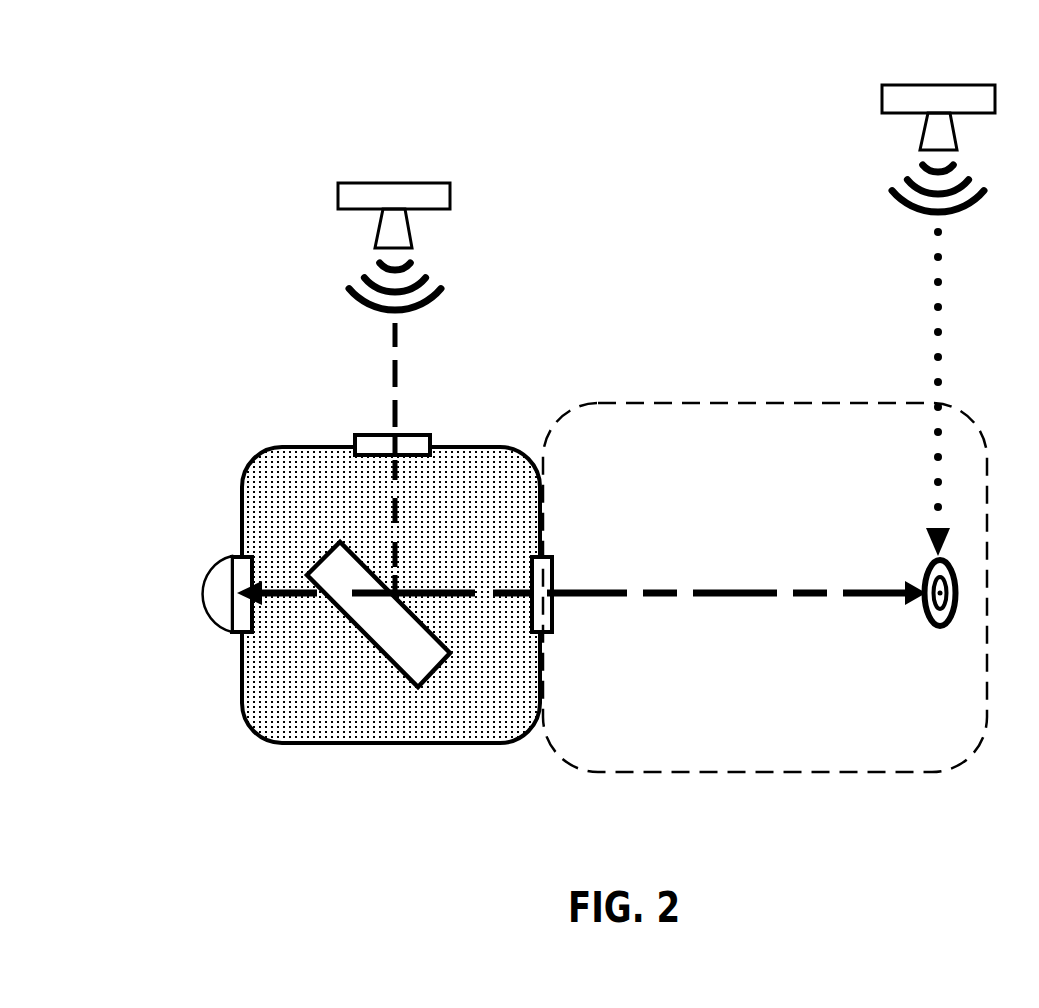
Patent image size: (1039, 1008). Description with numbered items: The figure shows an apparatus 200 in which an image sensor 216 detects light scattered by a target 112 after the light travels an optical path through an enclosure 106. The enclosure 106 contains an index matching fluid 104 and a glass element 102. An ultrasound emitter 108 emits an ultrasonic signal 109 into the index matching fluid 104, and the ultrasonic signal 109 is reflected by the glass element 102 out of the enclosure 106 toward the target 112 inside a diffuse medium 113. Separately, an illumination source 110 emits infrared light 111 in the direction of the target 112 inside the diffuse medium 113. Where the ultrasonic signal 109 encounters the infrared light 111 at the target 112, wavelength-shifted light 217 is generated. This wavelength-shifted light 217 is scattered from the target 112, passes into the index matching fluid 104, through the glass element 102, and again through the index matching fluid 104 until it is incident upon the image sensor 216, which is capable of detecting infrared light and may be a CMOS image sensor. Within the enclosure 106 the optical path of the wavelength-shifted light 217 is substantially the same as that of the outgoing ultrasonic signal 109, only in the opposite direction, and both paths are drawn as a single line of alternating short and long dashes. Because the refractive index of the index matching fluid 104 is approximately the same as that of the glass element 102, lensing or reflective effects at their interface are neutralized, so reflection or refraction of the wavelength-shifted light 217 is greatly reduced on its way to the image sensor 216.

The apparatus 200 is at (232, 33).
The glass element 102 is at (377, 650).
The index matching fluid 104 is at (257, 714).
The enclosure 106 is at (432, 745).
The ultrasound emitter 108 is at (338, 208).
The ultrasonic signal 109 is at (392, 340).
The illumination source 110 is at (882, 100).
The infrared light 111 is at (934, 258).
The target 112 is at (937, 630).
The diffuse medium 113 is at (612, 776).
The image sensor 216 is at (207, 628).
The wavelength-shifted light 217 is at (316, 598).